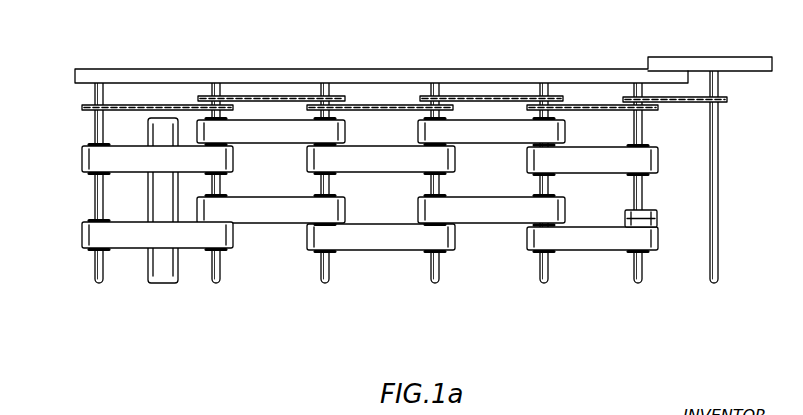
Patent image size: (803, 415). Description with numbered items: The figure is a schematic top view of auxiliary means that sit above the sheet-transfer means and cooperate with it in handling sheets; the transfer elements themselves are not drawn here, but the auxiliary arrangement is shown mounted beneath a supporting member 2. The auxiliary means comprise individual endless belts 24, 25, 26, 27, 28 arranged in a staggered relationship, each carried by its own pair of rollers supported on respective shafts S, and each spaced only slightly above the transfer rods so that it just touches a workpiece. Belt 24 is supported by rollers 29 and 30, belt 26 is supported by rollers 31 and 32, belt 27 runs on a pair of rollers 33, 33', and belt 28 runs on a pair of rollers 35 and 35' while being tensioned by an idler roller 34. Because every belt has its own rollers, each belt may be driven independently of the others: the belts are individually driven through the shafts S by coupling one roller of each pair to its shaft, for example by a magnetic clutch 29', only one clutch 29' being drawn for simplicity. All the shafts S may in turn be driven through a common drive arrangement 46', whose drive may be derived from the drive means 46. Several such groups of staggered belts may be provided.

The top support bar 2 is at (102, 68).
The endless belt 24 is at (592, 252).
The endless belt 25 is at (493, 225).
The endless belt 26 is at (384, 252).
The endless belt 27 is at (280, 226).
The endless belt 28 is at (132, 249).
The roller 29 is at (628, 203).
The magnetic clutch 29' is at (665, 218).
The roller 30 is at (536, 252).
The roller 31 is at (428, 252).
The roller 32 is at (318, 252).
The roller 33 is at (349, 213).
The roller 33' is at (204, 198).
The idler roller 34 is at (160, 264).
The roller 35 is at (125, 202).
The roller 35' is at (70, 215).
The drive means 46 is at (675, 177).
The drive arrangement 46' is at (370, 73).
The shaft S is at (105, 200).